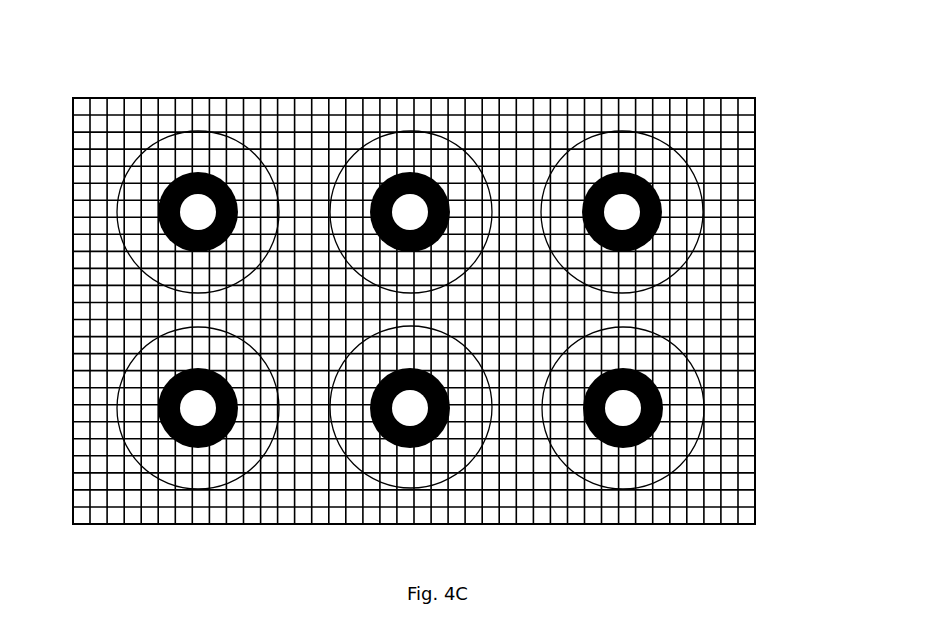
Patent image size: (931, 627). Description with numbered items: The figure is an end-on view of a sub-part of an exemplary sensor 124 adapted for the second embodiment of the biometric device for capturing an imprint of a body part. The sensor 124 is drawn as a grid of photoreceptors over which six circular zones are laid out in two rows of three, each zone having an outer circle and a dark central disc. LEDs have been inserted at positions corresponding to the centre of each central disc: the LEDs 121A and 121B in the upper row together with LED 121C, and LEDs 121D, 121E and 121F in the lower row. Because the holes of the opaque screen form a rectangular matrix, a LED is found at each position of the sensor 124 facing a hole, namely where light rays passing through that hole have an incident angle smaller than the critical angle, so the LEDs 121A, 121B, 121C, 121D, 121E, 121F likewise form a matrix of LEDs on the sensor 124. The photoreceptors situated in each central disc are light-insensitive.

The sensor 124 is at (737, 97).
The LED 121A is at (183, 218).
The LED 121B is at (416, 203).
The LED 121C is at (633, 216).
The LED 121D is at (188, 414).
The LED 121E is at (400, 423).
The LED 121F is at (630, 413).